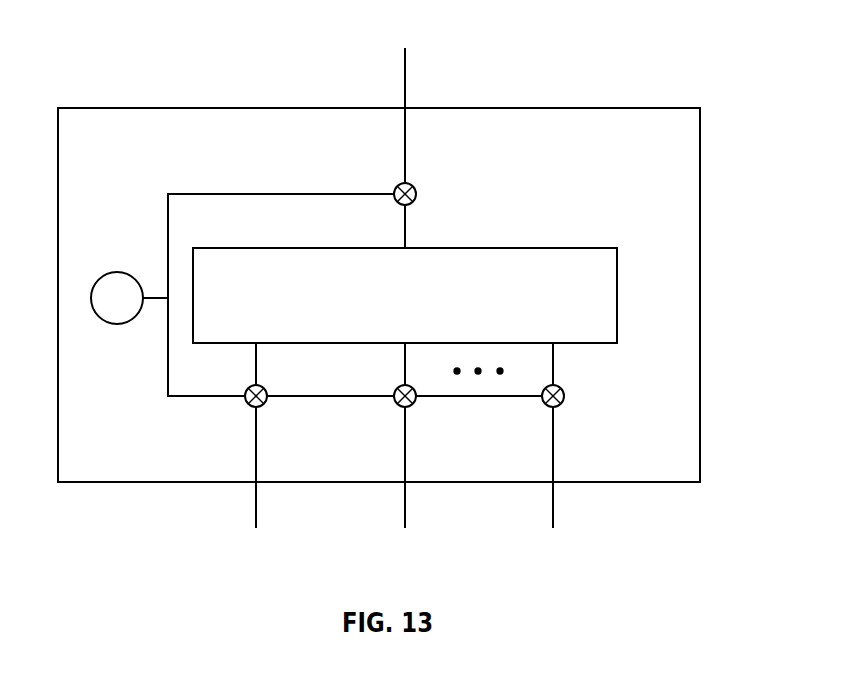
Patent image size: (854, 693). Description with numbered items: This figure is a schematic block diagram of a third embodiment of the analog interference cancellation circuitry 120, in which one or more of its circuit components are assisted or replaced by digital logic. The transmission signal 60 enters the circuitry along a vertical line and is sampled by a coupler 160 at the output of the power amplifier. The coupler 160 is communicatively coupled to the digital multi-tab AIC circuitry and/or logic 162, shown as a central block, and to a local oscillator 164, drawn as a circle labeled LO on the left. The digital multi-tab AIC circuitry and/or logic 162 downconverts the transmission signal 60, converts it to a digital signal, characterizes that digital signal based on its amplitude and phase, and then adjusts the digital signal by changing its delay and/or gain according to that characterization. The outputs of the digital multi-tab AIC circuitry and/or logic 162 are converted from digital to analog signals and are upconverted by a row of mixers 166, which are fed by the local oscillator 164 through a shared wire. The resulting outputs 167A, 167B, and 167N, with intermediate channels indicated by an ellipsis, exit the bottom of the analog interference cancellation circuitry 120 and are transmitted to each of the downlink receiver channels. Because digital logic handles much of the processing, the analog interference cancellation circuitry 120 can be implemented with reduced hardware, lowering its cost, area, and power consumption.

The transmission signal 60 is at (405, 83).
The analog interference cancellation circuitry 120 is at (641, 84).
The coupler 160 is at (416, 194).
The digital multi-tab AIC circuitry and/or logic 162 is at (570, 248).
The local oscillator 164 is at (117, 272).
The mixers 166 is at (249, 404).
The output 167A is at (258, 518).
The output 167B is at (407, 518).
The output 167N is at (556, 518).